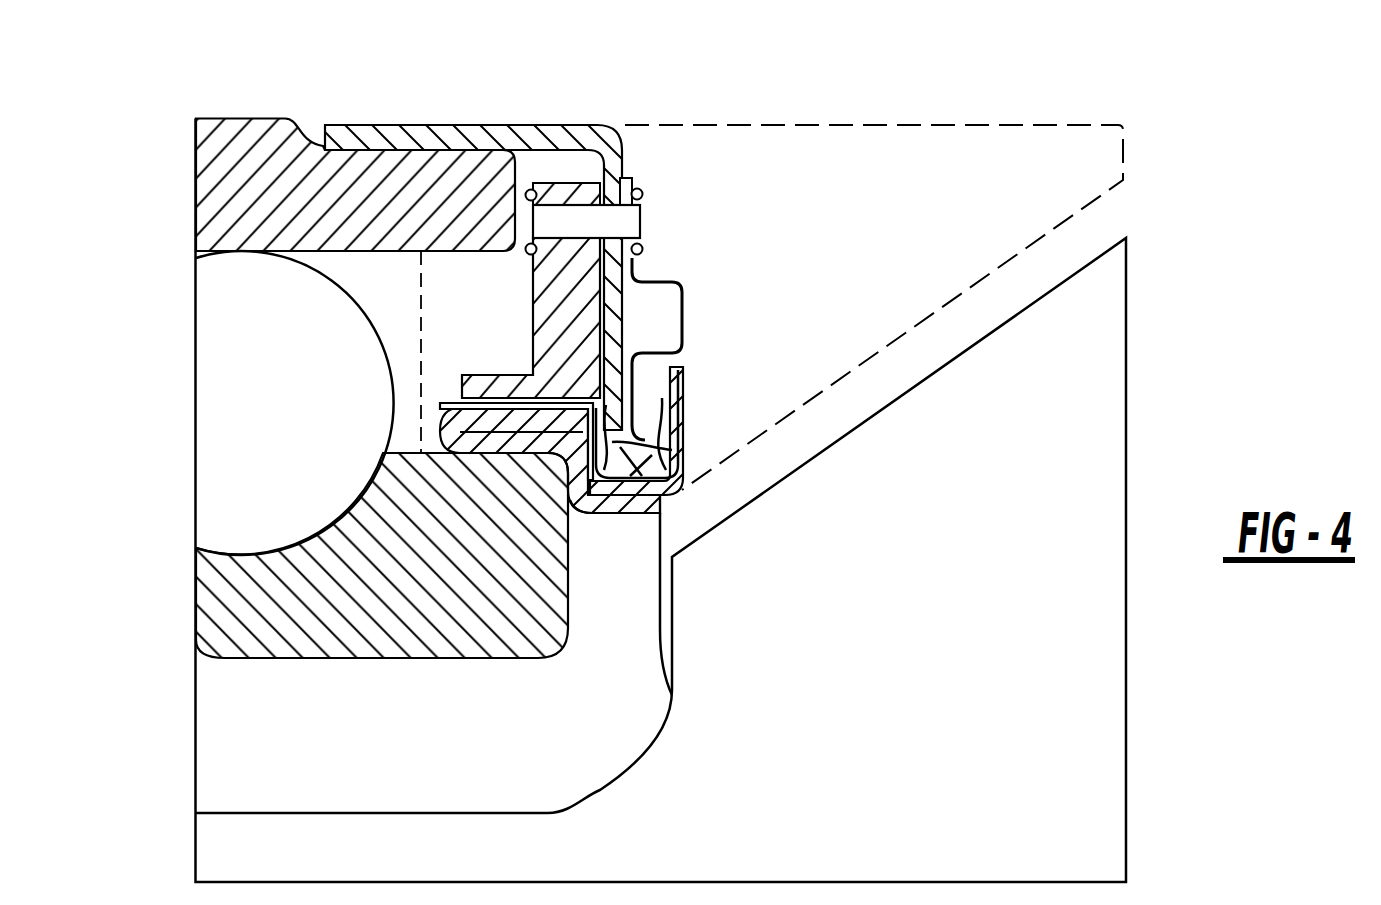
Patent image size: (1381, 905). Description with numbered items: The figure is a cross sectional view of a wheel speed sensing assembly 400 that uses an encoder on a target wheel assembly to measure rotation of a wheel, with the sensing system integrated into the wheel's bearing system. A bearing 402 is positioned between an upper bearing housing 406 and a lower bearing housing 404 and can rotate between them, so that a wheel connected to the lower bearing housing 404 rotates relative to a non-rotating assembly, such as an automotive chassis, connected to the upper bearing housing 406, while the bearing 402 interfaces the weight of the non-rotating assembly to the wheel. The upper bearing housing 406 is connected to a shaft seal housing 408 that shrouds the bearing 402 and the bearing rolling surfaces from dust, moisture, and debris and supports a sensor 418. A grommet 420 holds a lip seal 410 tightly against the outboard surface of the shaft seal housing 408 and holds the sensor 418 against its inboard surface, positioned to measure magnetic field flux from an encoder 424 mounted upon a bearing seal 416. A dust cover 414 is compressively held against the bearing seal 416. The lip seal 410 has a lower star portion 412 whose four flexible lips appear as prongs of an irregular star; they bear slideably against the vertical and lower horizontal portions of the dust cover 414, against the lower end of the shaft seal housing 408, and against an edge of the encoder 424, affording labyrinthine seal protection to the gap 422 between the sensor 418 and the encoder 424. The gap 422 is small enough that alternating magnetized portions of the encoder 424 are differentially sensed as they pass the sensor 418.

The wheel speed sensing assembly 400 is at (1068, 91).
The bearing 402 is at (262, 372).
The lower bearing housing 404 is at (297, 607).
The upper bearing housing 406 is at (278, 202).
The shaft seal housing 408 is at (452, 135).
The lip seal 410 is at (643, 322).
The star portion 412 is at (622, 444).
The dust cover 414 is at (688, 388).
The bearing seal 416 is at (607, 495).
The sensor 418 is at (570, 297).
The grommet 420 is at (641, 212).
The gap 422 is at (447, 403).
The encoder 424 is at (523, 420).